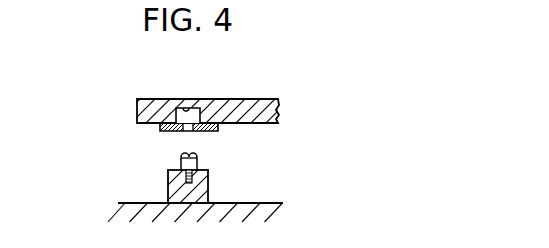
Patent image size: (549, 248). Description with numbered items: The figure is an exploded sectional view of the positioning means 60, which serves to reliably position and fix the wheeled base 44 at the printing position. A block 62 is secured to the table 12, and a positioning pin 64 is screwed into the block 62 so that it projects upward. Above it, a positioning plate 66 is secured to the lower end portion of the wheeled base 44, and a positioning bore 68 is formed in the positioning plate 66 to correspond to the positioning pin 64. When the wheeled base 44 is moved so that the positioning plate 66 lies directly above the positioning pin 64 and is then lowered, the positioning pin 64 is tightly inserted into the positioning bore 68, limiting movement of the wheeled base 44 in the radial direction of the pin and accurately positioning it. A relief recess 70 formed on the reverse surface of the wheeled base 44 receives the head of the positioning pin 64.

The table 12 is at (272, 203).
The wheeled base 44 is at (250, 99).
The positioning means 60 is at (122, 153).
The block 62 is at (208, 183).
The positioning pin 64 is at (196, 158).
The positioning plate 66 is at (218, 128).
The positioning bore 68 is at (187, 131).
The relief recess 70 is at (186, 107).